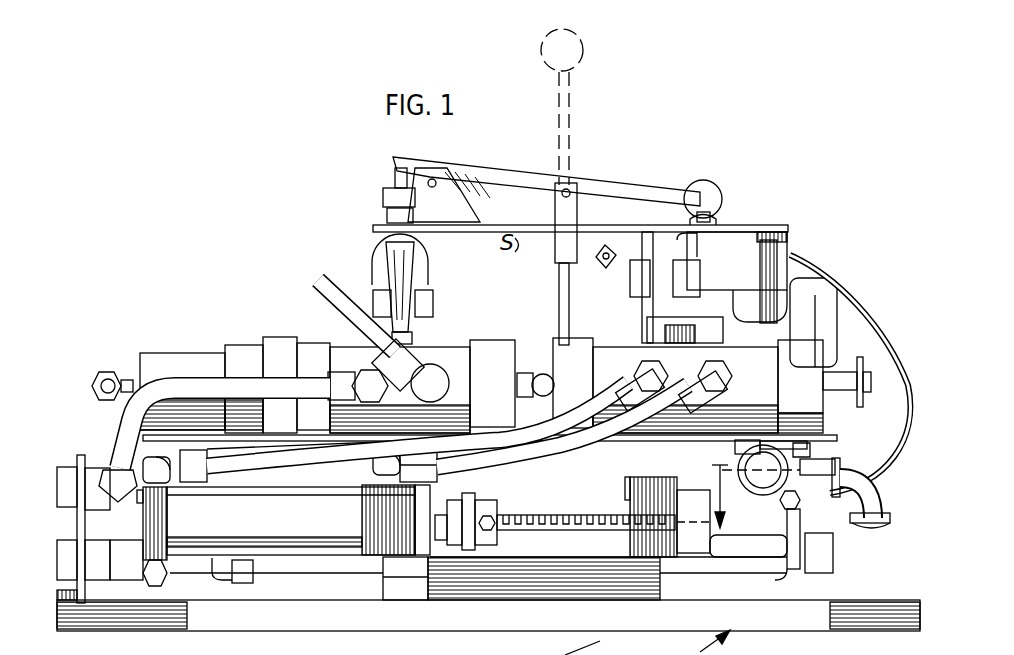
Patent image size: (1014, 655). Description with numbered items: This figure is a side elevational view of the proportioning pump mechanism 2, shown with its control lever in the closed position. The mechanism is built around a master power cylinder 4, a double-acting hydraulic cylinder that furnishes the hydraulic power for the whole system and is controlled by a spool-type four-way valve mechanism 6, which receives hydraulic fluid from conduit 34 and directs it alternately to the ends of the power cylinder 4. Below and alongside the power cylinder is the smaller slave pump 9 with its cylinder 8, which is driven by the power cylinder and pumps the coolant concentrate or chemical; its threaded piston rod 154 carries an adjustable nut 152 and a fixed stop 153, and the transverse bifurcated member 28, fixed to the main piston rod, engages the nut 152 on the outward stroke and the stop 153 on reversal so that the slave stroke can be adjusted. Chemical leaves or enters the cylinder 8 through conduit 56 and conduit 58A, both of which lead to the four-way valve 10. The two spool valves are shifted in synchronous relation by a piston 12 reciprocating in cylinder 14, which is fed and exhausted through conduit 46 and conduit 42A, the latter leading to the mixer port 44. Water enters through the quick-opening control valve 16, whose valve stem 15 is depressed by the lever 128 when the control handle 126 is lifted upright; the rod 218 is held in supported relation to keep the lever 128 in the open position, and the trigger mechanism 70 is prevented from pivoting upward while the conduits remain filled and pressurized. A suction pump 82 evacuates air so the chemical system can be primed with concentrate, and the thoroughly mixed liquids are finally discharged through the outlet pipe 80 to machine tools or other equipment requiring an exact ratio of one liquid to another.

The proportioning pump mechanism 2 is at (752, 206).
The master power cylinder 4 is at (268, 473).
The four-way valve mechanism 6 is at (442, 337).
The cylinder 8 is at (203, 556).
The slave pump 9 is at (288, 553).
The four-way valve 10 is at (768, 404).
The piston 12 is at (841, 422).
The cylinder 14 is at (165, 352).
The valve stem 15 is at (395, 178).
The quick-opening control valve 16 is at (377, 238).
The transverse bifurcated member 28 is at (472, 550).
The conduit 34 is at (420, 256).
The conduit 42A is at (815, 562).
The mixer port 44 is at (822, 546).
The conduit 46 is at (112, 372).
The conduit 56 is at (540, 452).
The conduit 58A is at (343, 455).
The trigger mechanism 70 is at (618, 245).
The outlet pipe 80 is at (120, 568).
The suction pump 82 is at (747, 514).
The control handle 126 is at (700, 182).
The lever 128 is at (500, 189).
The nut 152 is at (497, 539).
The stop 153 is at (430, 540).
The threaded piston rod 154 is at (645, 527).
The rod 218 is at (572, 312).